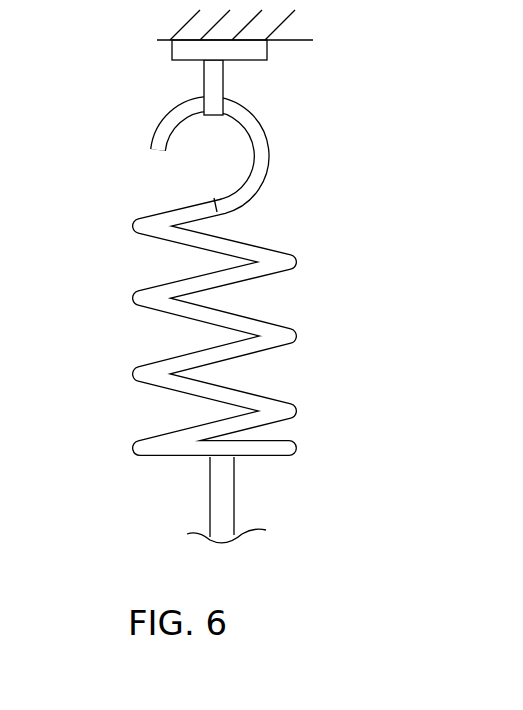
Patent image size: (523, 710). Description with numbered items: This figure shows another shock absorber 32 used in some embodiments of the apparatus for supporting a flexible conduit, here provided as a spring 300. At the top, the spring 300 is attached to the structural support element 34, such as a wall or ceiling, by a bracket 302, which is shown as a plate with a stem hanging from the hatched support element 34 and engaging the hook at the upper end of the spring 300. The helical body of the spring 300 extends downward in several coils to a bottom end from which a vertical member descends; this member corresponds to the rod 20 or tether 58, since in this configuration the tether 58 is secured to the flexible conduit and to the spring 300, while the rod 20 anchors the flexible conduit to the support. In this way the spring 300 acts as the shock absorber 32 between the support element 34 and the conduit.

The structural support element 34 is at (325, 28).
The bracket 302 is at (172, 52).
The shock absorber 32 is at (314, 276).
The spring 300 is at (248, 270).
The rod 20 is at (311, 500).
The tether 58 is at (234, 498).